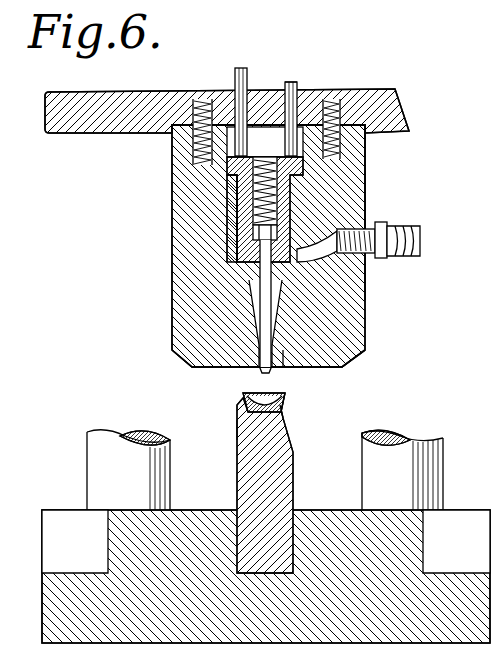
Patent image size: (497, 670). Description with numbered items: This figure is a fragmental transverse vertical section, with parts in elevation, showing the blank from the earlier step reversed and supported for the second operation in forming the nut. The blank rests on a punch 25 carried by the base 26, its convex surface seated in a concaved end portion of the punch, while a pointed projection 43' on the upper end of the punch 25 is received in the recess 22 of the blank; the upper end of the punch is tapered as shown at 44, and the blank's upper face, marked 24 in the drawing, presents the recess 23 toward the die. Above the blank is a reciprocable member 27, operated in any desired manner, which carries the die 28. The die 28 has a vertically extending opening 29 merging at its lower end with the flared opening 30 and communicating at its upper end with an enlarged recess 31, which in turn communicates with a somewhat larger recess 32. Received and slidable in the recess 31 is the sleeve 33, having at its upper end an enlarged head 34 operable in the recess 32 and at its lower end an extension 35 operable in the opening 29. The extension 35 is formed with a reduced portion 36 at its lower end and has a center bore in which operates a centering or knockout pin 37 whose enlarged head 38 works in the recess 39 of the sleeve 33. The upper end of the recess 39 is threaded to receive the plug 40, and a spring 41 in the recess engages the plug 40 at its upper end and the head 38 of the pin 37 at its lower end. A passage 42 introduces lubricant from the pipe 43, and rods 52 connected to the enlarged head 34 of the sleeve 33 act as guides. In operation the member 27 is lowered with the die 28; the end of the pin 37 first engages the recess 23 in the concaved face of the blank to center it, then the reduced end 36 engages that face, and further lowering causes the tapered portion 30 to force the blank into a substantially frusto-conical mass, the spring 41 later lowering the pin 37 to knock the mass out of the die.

The recess 22 is at (250, 408).
The recess 23 is at (252, 396).
The cup rim 24 is at (284, 398).
The punch 25 is at (295, 470).
The base 26 is at (315, 512).
The reciprocable member 27 is at (385, 103).
The die 28 is at (366, 204).
The vertically extending opening 29 is at (366, 296).
The flared opening 30 is at (344, 363).
The enlarged recess 31 is at (256, 236).
The larger recess 32 is at (290, 100).
The sleeve 33 is at (238, 205).
The enlarged head 34 is at (300, 127).
The extension 35 is at (252, 298).
The reduced portion 36 is at (246, 362).
The centering or knockout pin 37 is at (284, 368).
The enlarged head 38 is at (303, 224).
The recess 39 is at (236, 222).
The plug 40 is at (270, 135).
The spring 41 is at (240, 180).
The passage 42 is at (366, 270).
The pipe 43 is at (392, 231).
The pointed projection 43' is at (307, 421).
The tapered upper end of punch 44 is at (237, 447).
The rods 52 is at (235, 74).